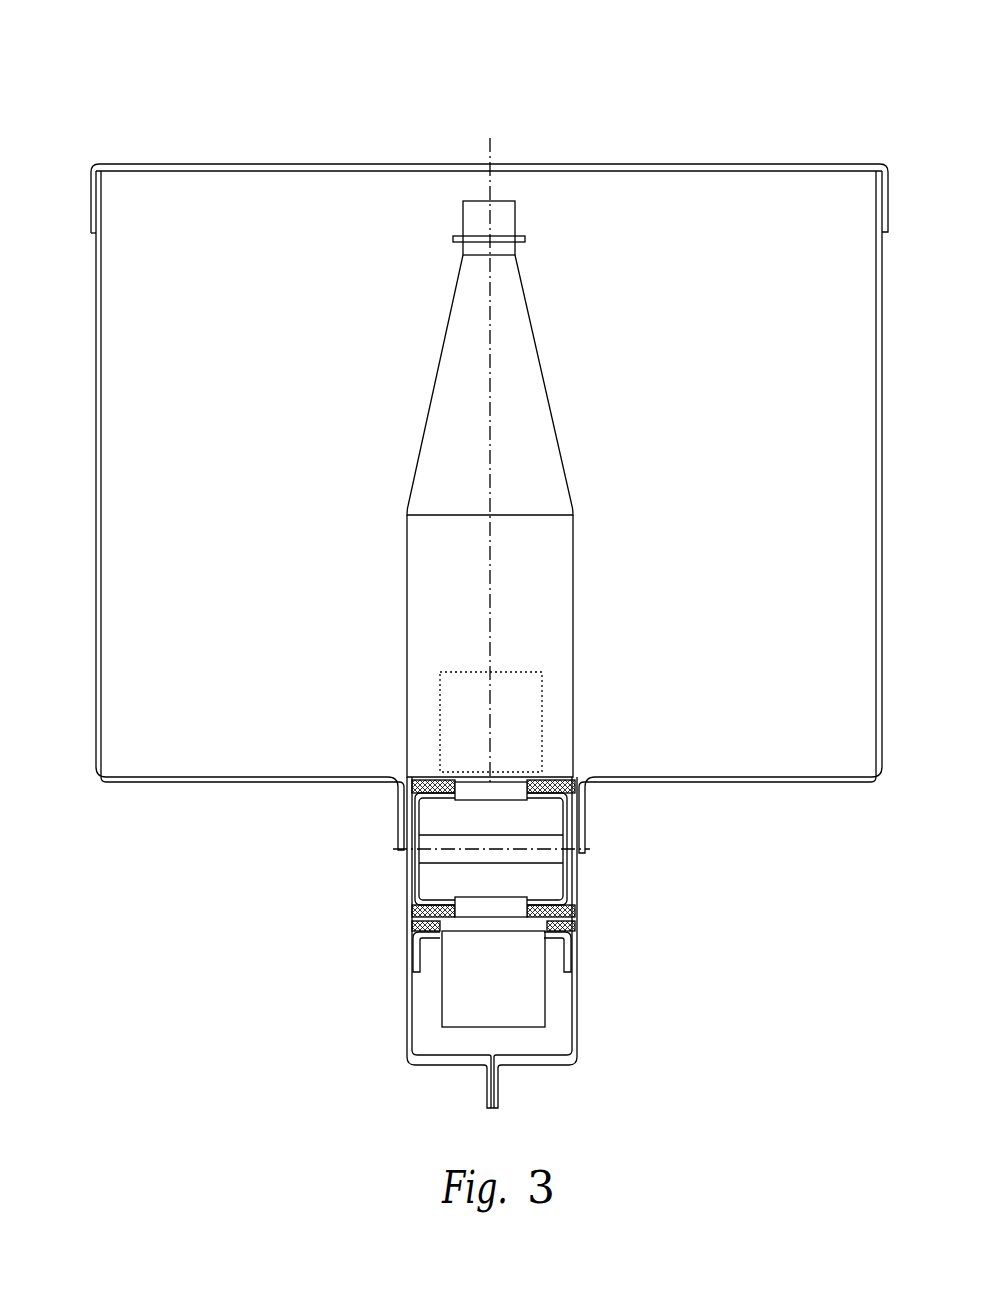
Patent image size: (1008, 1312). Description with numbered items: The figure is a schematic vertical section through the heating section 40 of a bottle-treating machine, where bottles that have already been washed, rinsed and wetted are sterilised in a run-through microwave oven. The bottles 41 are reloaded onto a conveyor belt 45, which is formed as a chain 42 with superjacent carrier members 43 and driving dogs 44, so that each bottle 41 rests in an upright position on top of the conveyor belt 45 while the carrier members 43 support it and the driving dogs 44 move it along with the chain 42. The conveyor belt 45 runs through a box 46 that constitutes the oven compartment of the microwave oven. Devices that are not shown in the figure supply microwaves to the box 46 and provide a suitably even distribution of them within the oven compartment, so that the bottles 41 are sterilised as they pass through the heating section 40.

The heating section 40 is at (657, 91).
The bottles 41 is at (558, 450).
The chain 42 is at (544, 877).
The carrier members 43 is at (466, 778).
The driving dogs 44 is at (541, 703).
The conveyor belt 45 is at (633, 755).
The box 46 is at (760, 166).